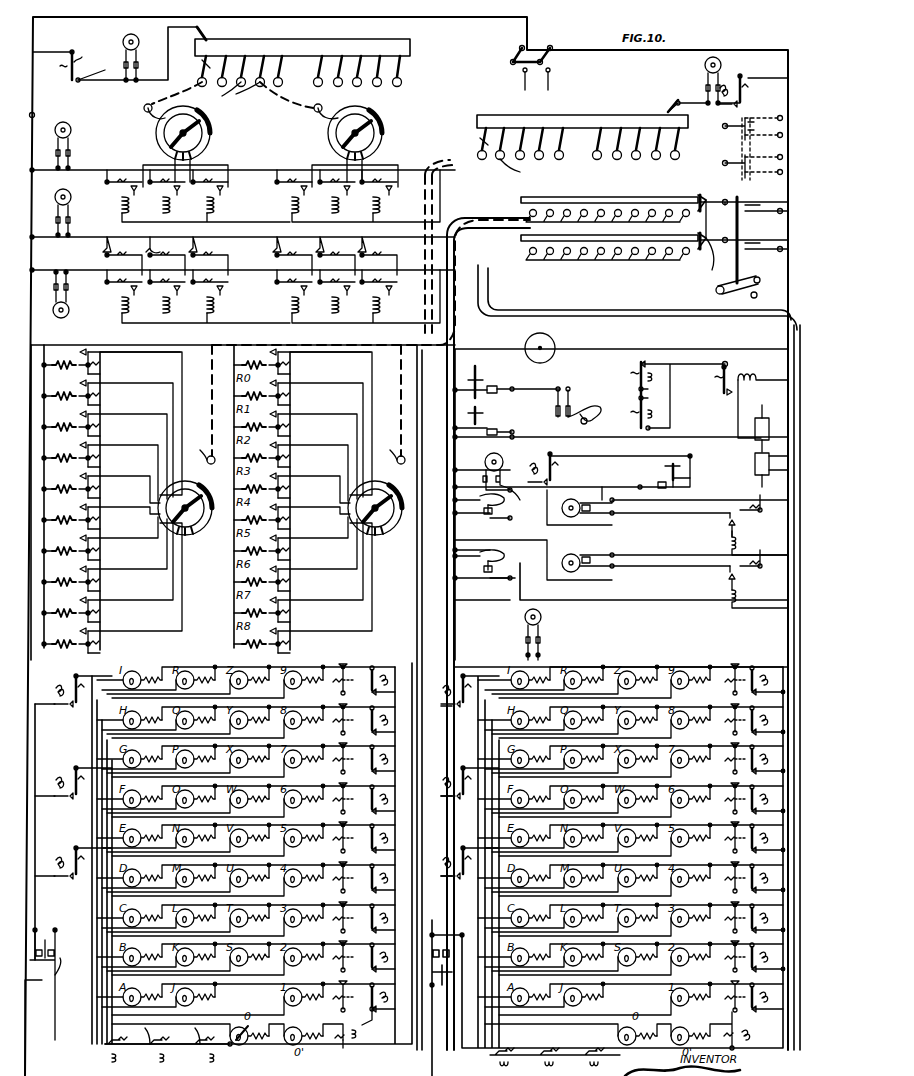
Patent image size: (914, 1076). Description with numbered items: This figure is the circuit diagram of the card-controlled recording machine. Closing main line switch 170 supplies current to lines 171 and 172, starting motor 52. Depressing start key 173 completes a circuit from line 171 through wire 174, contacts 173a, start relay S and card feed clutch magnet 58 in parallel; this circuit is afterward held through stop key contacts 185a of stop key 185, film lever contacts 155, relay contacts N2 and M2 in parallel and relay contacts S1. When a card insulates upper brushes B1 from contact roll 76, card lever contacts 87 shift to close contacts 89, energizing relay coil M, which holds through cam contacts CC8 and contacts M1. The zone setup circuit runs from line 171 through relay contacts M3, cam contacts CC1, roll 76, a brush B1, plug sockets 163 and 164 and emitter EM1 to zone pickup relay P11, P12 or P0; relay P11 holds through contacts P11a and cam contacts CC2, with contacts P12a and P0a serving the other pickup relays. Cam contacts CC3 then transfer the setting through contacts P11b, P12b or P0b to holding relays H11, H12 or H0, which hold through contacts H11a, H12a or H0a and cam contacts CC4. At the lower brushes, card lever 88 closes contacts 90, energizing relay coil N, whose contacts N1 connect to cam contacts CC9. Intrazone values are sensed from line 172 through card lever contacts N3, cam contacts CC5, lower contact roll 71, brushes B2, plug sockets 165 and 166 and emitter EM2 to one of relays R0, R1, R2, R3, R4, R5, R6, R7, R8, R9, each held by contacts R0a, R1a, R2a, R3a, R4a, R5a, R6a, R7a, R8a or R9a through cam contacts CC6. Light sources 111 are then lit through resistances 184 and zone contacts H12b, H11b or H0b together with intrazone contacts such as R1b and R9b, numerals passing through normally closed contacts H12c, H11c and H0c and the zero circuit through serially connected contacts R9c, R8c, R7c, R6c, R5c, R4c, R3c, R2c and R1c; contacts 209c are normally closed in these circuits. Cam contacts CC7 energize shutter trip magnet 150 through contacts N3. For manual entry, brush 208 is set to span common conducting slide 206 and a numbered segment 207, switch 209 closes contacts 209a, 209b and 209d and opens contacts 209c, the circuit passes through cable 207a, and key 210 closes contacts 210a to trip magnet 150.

The switch M3 is at (70, 86).
The relay coil M is at (78, 62).
The cam contact CC1 is at (122, 72).
The conductor 171 is at (35, 113).
The cam contact CC2 is at (70, 158).
The cam contact CC3 is at (58, 230).
The cam contact CC4 is at (56, 308).
The upper brushes 76 is at (412, 50).
The brush bar B1 is at (202, 60).
The conductor 163 is at (220, 95).
The conductor 164 is at (144, 111).
The emitter EM1 is at (212, 133).
The relay contact P12a is at (114, 183).
The relay contact P11a is at (176, 194).
The relay contact P0a is at (226, 192).
The relay P12 is at (118, 206).
The relay P11 is at (265, 207).
The relay P0 is at (216, 208).
The relay contact P11b is at (162, 244).
The relay contact P0b is at (200, 250).
The relay contact P12b is at (100, 248).
The relay contact H12a is at (104, 290).
The relay contact H11a is at (176, 296).
The relay contact H0a is at (226, 292).
The relay H12 is at (118, 314).
The relay H11 is at (170, 316).
The relay H0 is at (216, 308).
The lower brushes 71 is at (494, 115).
The brush bar B2 is at (480, 138).
The conductor 165 is at (556, 160).
The switch 170 is at (552, 60).
The cable 172 is at (660, 50).
The cam contact CC5 is at (708, 88).
The relay contact N3 is at (552, 454).
The relay contact 209c is at (740, 156).
The relay contact 209d is at (742, 170).
The relay contact 209a is at (764, 192).
The relay contact 209b is at (764, 232).
The contact bar 206 is at (584, 190).
The contact brushes 207 is at (528, 212).
The contact brushes 207a is at (466, 265).
The pivot 208 is at (712, 280).
The lever 209 is at (734, 294).
The motor 52 is at (556, 344).
The contact 185 is at (478, 368).
The contact 185a is at (497, 386).
The contact 173 is at (486, 416).
The start contact 173a is at (500, 430).
The conductor 174 is at (462, 388).
The latch 155 is at (584, 398).
The relay contact N2 is at (644, 362).
The relay contact M2 is at (636, 425).
The relay coil S is at (750, 376).
The relay contact S1 is at (728, 400).
The magnet 58 is at (760, 422).
The magnet 150 is at (755, 464).
The contact 210 is at (664, 468).
The contact 210a is at (676, 492).
The cam contact CC7 is at (500, 490).
The cam contact CC8 is at (602, 494).
The contact 89 is at (506, 508).
The conductor 87 is at (467, 499).
The conductor 88 is at (467, 553).
The contact 90 is at (484, 580).
The cam contact CC9 is at (603, 575).
The relay contact M1 is at (726, 520).
The relay contact N1 is at (726, 574).
The relay coil N is at (726, 600).
The cam contact CC6 is at (548, 642).
The relay R0 is at (346, 1055).
The relay R1 is at (70, 398).
The relay R2 is at (70, 429).
The relay R3 is at (70, 460).
The relay R4 is at (70, 491).
The relay R5 is at (70, 522).
The relay R6 is at (70, 553).
The relay R7 is at (70, 584).
The relay R8 is at (70, 615).
The relay R9 is at (390, 644).
The relay contact R0a is at (97, 365).
The relay contact R1a is at (130, 440).
The relay contact R2a is at (127, 456).
The relay contact R3a is at (123, 473).
The relay contact R4a is at (124, 489).
The relay contact R5a is at (124, 518).
The relay contact R6a is at (123, 538).
The relay contact R7a is at (127, 555).
The relay contact R8a is at (130, 571).
The relay contact R9a is at (135, 588).
The emitter EM2 is at (198, 536).
The conductor 166 is at (295, 450).
The relay contact H12b is at (68, 710).
The relay contact H11b is at (68, 800).
The relay contact H0b is at (66, 880).
The lamp 184 is at (246, 844).
The resistor 111 is at (183, 672).
The relay contact R1b is at (379, 1019).
The relay contact R9c is at (336, 680).
The relay contact R8c is at (316, 734).
The relay contact R7c is at (316, 773).
The relay contact R6c is at (320, 813).
The relay contact R5c is at (320, 852).
The relay contact R4c is at (314, 892).
The relay contact R3c is at (314, 932).
The relay contact R2c is at (314, 971).
The relay contact R1c is at (320, 1011).
The relay contact R9b is at (389, 838).
The relay contact H12c is at (105, 1046).
The relay contact H11c is at (134, 1033).
The relay contact H0c is at (186, 1033).